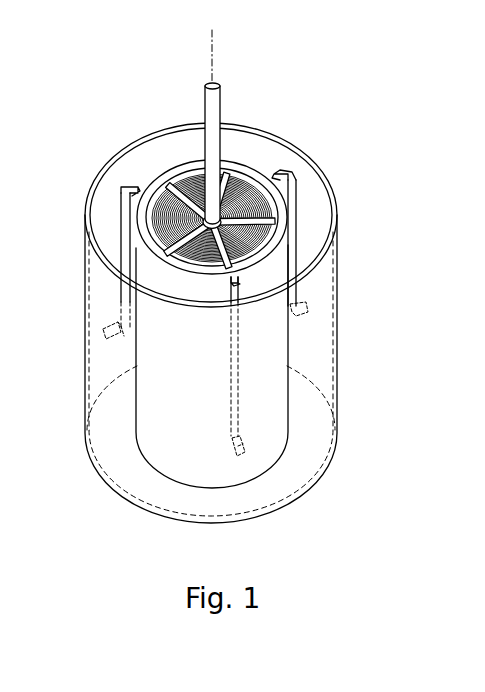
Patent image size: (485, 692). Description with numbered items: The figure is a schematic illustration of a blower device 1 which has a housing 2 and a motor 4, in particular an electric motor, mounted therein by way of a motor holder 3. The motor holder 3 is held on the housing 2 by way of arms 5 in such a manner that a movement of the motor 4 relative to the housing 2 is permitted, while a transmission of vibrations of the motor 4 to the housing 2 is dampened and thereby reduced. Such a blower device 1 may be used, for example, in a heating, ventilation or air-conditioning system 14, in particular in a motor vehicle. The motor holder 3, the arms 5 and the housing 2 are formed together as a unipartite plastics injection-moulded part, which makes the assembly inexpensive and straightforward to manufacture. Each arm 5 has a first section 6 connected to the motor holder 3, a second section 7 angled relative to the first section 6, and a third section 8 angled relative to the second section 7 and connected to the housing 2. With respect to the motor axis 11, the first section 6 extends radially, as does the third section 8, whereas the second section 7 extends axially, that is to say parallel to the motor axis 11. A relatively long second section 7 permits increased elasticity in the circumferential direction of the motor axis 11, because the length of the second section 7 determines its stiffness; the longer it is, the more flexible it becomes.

The blower device 1 is at (135, 97).
The housing 2 is at (338, 222).
The motor holder 3 is at (288, 240).
The motor 4 is at (246, 200).
The arms 5 is at (120, 213).
The first section 6 is at (131, 186).
The second section 7 is at (121, 243).
The third section 8 is at (112, 337).
The motor axis 11 is at (212, 50).
The heating, ventilation or air-conditioning system 14 is at (404, 363).